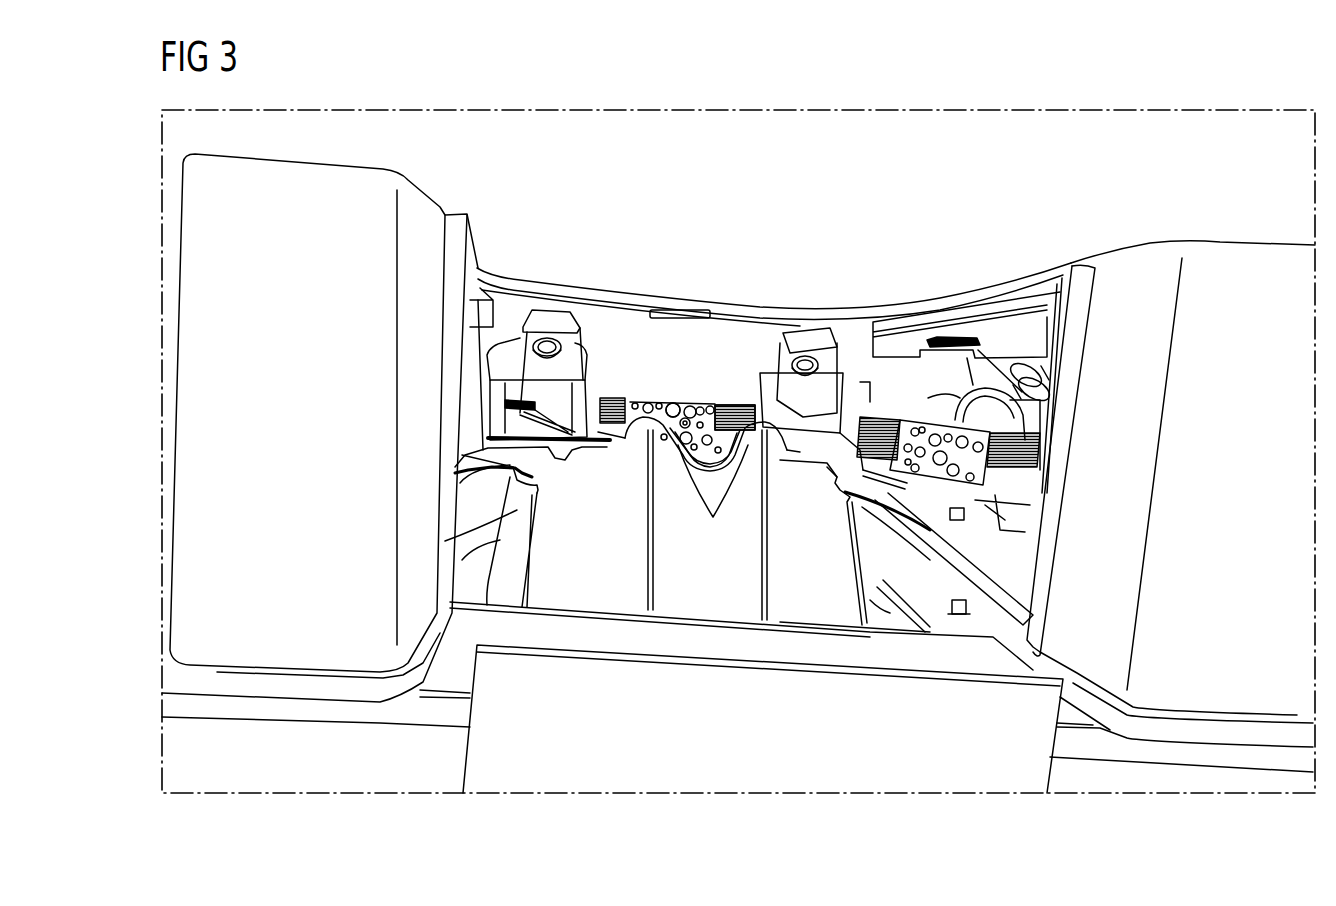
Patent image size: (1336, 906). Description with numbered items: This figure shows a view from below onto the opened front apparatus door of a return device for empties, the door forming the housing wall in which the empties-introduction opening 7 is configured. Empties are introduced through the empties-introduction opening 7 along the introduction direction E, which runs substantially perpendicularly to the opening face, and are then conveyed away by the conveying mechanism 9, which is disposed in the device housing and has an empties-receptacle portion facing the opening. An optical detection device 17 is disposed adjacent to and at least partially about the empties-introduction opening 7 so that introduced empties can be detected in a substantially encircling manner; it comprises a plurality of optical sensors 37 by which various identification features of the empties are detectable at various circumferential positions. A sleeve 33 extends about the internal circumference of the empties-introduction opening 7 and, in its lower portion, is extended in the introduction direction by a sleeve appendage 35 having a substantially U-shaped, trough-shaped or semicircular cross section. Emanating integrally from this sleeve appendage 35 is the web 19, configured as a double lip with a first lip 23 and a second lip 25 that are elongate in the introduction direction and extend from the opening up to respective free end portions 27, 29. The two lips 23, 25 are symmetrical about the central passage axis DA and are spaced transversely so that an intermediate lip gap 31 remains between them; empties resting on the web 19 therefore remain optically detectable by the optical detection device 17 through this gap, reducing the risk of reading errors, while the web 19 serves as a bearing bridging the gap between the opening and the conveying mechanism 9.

The empties-introduction opening 7 is at (910, 628).
The conveying mechanism 9 is at (705, 410).
The optical detection device 17 is at (428, 185).
The web 19 is at (713, 512).
The first lip 23 is at (660, 405).
The second lip 25 is at (765, 400).
The free end portion 27 is at (680, 405).
The free end portion 29 is at (735, 412).
The intermediate lip gap 31 is at (828, 483).
The sleeve 33 is at (445, 541).
The sleeve appendage 35 is at (539, 477).
The optical sensors 37 is at (553, 338).